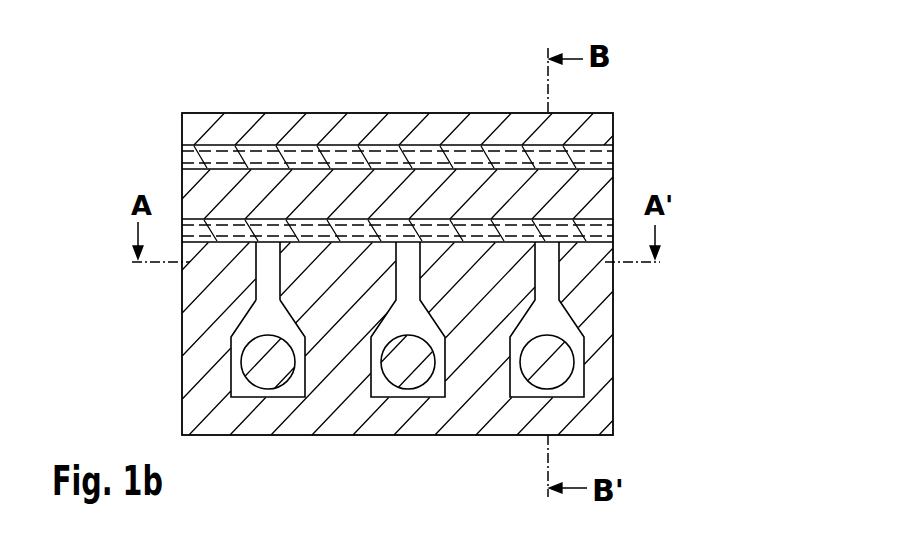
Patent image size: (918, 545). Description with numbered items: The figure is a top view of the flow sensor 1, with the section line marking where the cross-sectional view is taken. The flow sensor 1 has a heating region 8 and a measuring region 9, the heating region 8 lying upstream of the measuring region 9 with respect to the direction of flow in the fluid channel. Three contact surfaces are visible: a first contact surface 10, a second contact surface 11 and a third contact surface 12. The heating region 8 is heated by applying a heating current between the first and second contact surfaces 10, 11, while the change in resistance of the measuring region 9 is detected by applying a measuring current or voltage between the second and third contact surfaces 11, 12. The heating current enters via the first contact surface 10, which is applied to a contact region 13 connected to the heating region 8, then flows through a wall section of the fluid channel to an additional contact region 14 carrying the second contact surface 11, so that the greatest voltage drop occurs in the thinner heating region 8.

The flow sensor 1 is at (665, 162).
The heating region 8 is at (267, 260).
The measuring region 9 is at (543, 260).
The first contact surface 10 is at (277, 375).
The second contact surface 11 is at (407, 372).
The third contact surface 12 is at (545, 375).
The contact region 13 is at (237, 352).
The additional contact region 14 is at (380, 382).